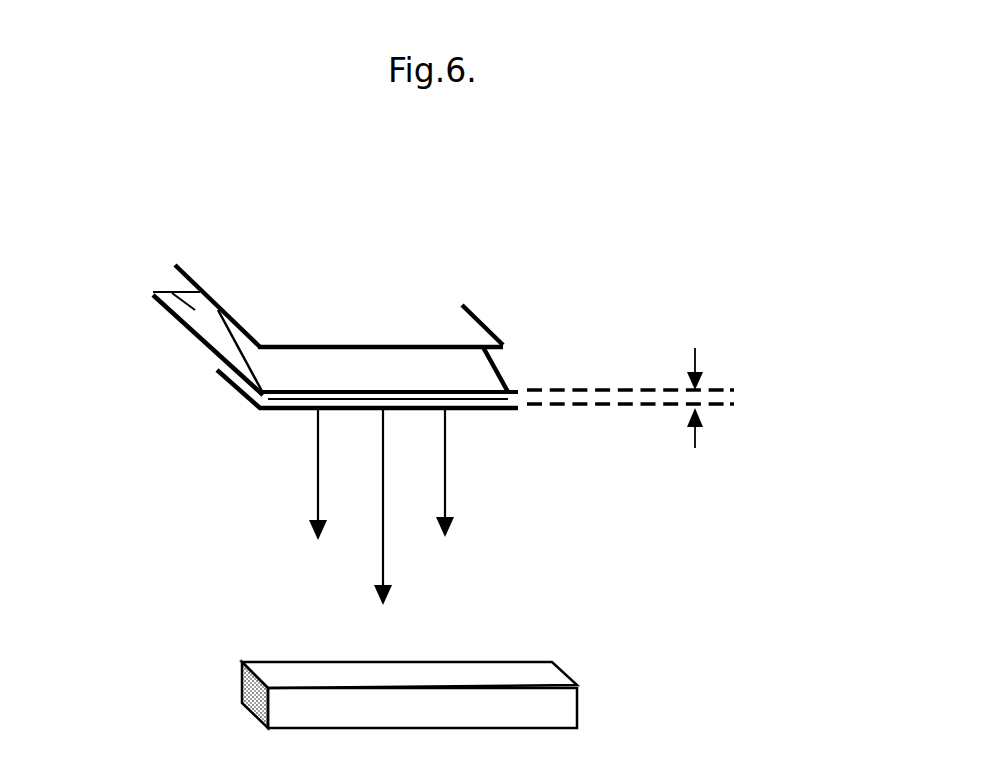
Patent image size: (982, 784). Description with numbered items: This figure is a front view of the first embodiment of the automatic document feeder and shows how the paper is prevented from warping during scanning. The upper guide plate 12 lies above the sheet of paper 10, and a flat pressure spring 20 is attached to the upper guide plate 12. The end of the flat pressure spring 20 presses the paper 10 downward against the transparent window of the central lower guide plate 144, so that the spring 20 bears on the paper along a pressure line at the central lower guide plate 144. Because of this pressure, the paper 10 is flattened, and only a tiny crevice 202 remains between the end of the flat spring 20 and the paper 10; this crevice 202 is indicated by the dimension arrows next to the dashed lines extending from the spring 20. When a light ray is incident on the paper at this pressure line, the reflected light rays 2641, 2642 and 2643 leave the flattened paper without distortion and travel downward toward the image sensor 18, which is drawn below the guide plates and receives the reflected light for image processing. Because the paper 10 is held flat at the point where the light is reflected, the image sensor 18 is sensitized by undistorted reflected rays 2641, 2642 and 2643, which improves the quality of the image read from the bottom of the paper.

The paper 10 is at (157, 292).
The upper guide plate 12 is at (374, 317).
The flat pressure spring 20 is at (482, 383).
The central lower guide plate 144 is at (245, 410).
The crevice 202 is at (664, 398).
The reflected light ray 2641 is at (318, 478).
The reflected light ray 2642 is at (383, 532).
The reflected light ray 2643 is at (448, 483).
The image sensor 18 is at (557, 710).